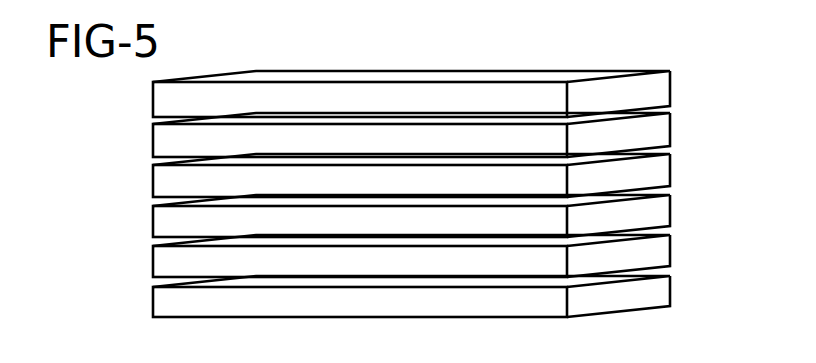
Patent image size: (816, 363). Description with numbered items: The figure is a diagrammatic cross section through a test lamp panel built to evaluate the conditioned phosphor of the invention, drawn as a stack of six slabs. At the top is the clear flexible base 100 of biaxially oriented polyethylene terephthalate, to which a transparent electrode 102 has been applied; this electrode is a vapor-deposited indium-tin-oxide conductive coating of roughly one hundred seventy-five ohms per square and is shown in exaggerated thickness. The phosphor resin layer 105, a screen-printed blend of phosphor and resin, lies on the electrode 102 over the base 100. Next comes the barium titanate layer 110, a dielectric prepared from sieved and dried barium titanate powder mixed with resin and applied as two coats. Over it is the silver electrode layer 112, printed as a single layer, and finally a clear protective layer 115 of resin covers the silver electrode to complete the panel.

The clear flexible base 100 is at (663, 90).
The transparent electrode 102 is at (665, 130).
The phosphor resin layer 105 is at (665, 170).
The barium titanate layer 110 is at (663, 212).
The silver electrode layer 112 is at (665, 252).
The clear protective layer 115 is at (665, 292).